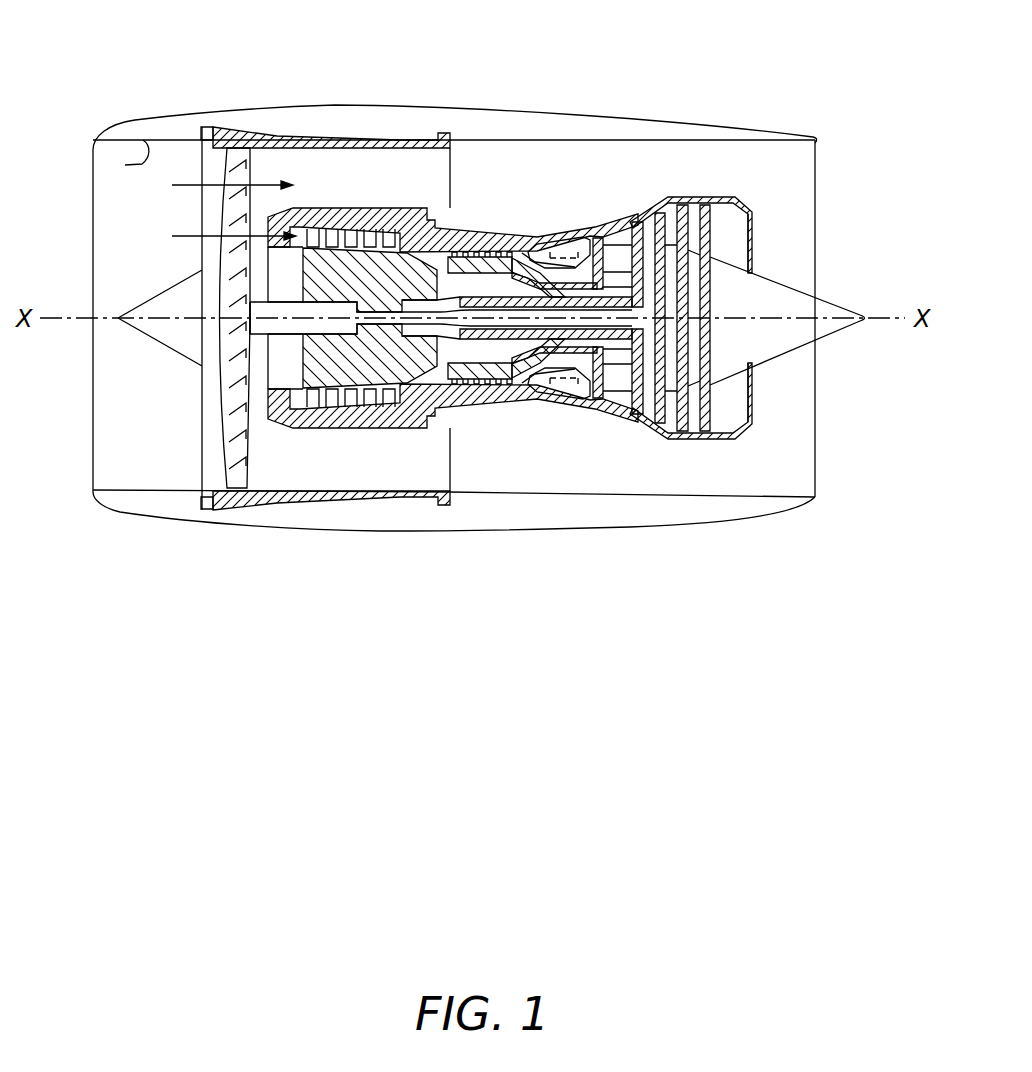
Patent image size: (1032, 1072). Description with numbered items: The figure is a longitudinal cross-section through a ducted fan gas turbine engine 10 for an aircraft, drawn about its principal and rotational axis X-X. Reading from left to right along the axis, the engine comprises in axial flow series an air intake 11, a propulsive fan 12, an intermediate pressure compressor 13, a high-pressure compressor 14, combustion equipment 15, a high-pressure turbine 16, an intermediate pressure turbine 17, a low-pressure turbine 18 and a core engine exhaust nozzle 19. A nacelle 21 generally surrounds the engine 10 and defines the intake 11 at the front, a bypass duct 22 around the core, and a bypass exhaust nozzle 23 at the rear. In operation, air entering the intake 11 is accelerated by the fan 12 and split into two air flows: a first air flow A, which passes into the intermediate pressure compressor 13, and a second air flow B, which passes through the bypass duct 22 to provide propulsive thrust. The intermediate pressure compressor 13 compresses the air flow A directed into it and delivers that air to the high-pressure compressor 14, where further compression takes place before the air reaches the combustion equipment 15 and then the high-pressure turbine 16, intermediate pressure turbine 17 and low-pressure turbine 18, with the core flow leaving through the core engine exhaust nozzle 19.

The ducted fan gas turbine engine 10 is at (127, 66).
The air intake 11 is at (125, 165).
The propulsive fan 12 is at (222, 440).
The intermediate pressure compressor 13 is at (367, 498).
The high-pressure compressor 14 is at (475, 253).
The combustion equipment 15 is at (545, 385).
The high-pressure turbine 16 is at (598, 395).
The intermediate pressure turbine 17 is at (632, 222).
The low-pressure turbine 18 is at (656, 432).
The core engine exhaust nozzle 19 is at (750, 203).
The nacelle 21 is at (352, 105).
The bypass duct 22 is at (740, 480).
The bypass exhaust nozzle 23 is at (818, 143).